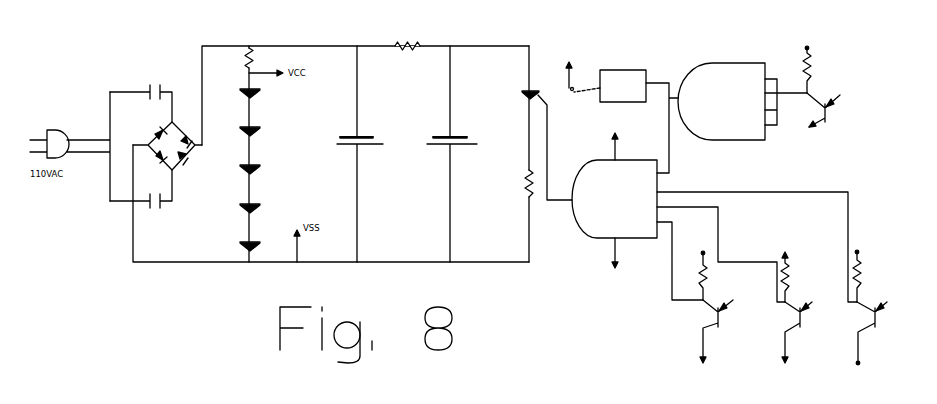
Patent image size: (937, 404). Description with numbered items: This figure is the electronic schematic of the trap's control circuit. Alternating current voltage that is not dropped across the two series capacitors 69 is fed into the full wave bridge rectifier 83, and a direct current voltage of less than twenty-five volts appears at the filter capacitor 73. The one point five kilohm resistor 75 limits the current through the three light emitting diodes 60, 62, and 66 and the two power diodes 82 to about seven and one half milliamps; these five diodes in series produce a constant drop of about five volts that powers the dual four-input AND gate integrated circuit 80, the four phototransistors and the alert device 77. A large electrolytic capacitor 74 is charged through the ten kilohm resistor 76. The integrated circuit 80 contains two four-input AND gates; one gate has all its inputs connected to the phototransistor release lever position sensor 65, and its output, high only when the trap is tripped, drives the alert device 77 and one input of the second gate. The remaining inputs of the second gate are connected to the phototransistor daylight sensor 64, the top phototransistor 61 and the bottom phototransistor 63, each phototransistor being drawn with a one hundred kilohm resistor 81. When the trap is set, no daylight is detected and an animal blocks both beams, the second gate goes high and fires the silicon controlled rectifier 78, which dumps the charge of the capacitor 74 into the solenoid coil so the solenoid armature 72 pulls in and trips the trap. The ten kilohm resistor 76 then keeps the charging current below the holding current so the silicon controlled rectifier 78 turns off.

The top infrared light emitting diode 60 is at (260, 93).
The top infrared phototransistor 61 is at (802, 327).
The bottom infrared light emitting diode 62 is at (260, 131).
The bottom infrared phototransistor 63 is at (878, 325).
The infrared phototransistor daylight sensor 64 is at (720, 325).
The infrared phototransistor release lever position sensor 65 is at (828, 114).
The infrared light emitting diode release lever position detector 66 is at (260, 169).
The 0.68 uF capacitor 69 is at (169, 235).
The solenoid armature 72 is at (521, 187).
The 470 uF capacitor 73 is at (400, 150).
The 3300 uF capacitor 74 is at (500, 150).
The 1.5 K resistor 75 is at (247, 73).
The 10 K resistor 76 is at (418, 53).
The alert device 77 is at (650, 75).
The silicon controlled rectifier 78 is at (520, 90).
The CD 4082 CMOS dual 4 input AND gate integrated circuit 80 is at (657, 232).
The 100 K resistor 81 is at (844, 63).
The 1N007 power diode 82 is at (260, 208).
The full wave bridge rectifier 83 is at (180, 170).